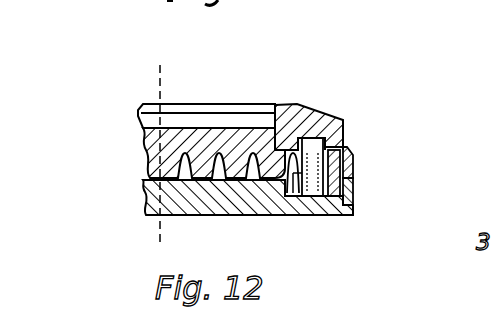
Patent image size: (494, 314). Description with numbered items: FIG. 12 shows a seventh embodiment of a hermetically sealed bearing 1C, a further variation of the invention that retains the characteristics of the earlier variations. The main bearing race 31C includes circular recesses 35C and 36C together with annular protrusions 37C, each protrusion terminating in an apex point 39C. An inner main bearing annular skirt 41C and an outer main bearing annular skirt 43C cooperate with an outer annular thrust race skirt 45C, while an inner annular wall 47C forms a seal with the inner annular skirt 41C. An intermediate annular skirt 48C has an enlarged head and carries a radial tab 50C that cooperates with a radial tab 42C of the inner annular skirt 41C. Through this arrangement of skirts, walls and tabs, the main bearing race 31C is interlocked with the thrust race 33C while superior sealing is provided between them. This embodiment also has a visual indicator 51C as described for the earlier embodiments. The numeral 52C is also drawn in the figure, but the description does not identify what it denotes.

The bearing 1C is at (147, 78).
The main bearing race 31C is at (287, 104).
The thrust race 33C is at (138, 191).
The circular recess 35C is at (200, 126).
The circular recess 36C is at (267, 126).
The annular protrusion 37C is at (163, 217).
The apex point 39C is at (232, 216).
The inner main bearing annular skirt 41C is at (350, 198).
The radial tab 42C is at (353, 190).
The outer main bearing annular skirt 43C is at (354, 170).
The outer annular thrust race skirt 45C is at (344, 162).
The inner annular wall 47C is at (280, 216).
The intermediate annular skirt 48C is at (320, 152).
The radial tab 50C is at (290, 125).
The visual indicator 51C is at (336, 158).
The clip stem 52C is at (311, 142).